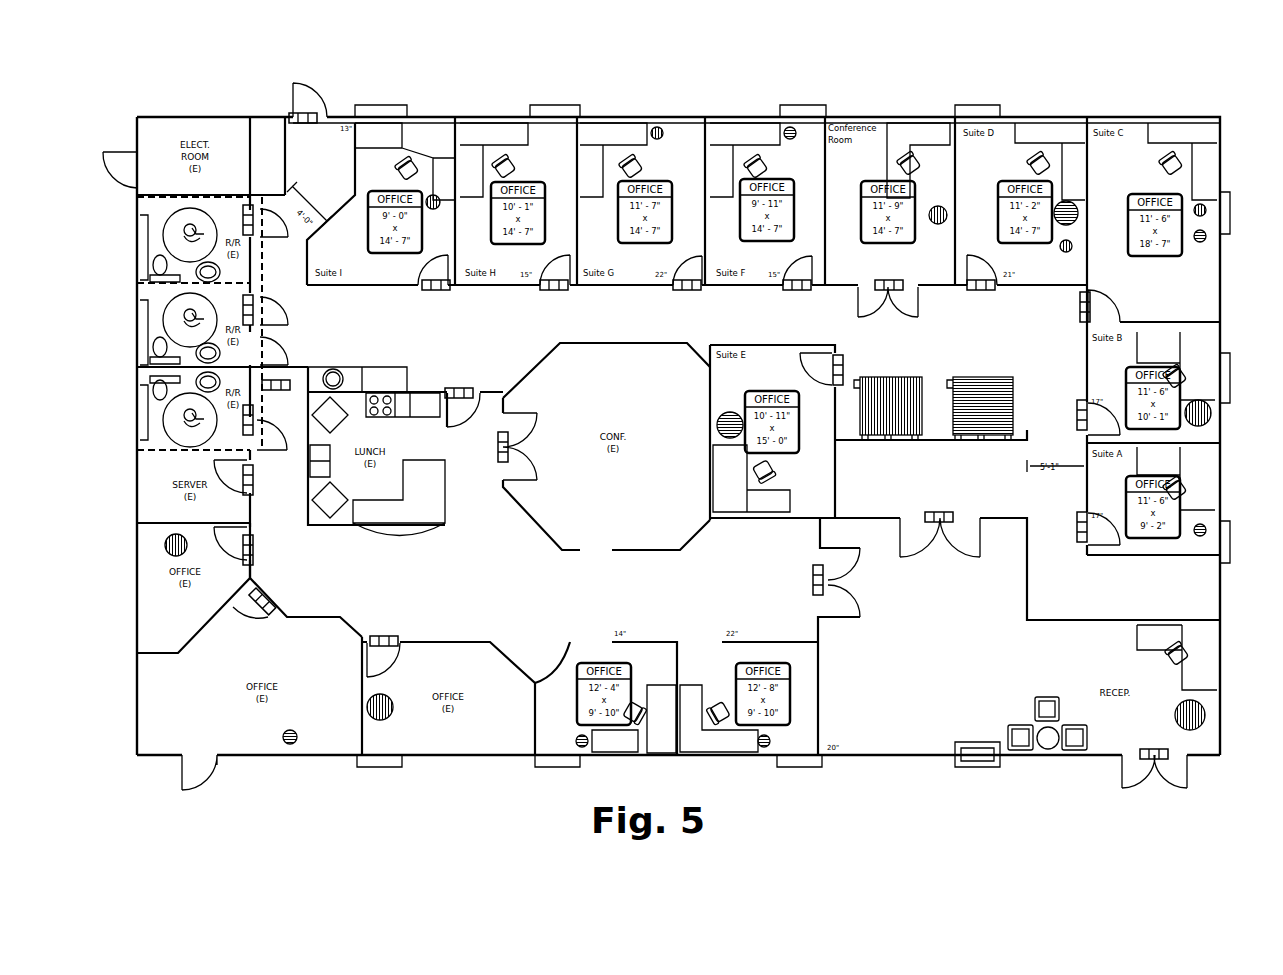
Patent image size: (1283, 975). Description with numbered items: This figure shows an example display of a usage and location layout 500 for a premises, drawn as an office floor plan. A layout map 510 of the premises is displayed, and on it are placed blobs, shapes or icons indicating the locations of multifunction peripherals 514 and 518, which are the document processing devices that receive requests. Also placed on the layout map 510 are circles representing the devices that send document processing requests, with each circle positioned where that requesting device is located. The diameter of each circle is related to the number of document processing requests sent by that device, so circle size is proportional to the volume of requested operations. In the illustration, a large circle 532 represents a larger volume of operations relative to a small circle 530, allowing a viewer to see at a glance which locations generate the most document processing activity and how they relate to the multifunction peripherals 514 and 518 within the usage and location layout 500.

The usage and location layout 500 is at (1233, 118).
The layout map 510 is at (910, 757).
The multifunction peripheral 514 is at (902, 377).
The multifunction peripheral 518 is at (993, 377).
The small circle 530 is at (290, 745).
The large circle 532 is at (388, 710).